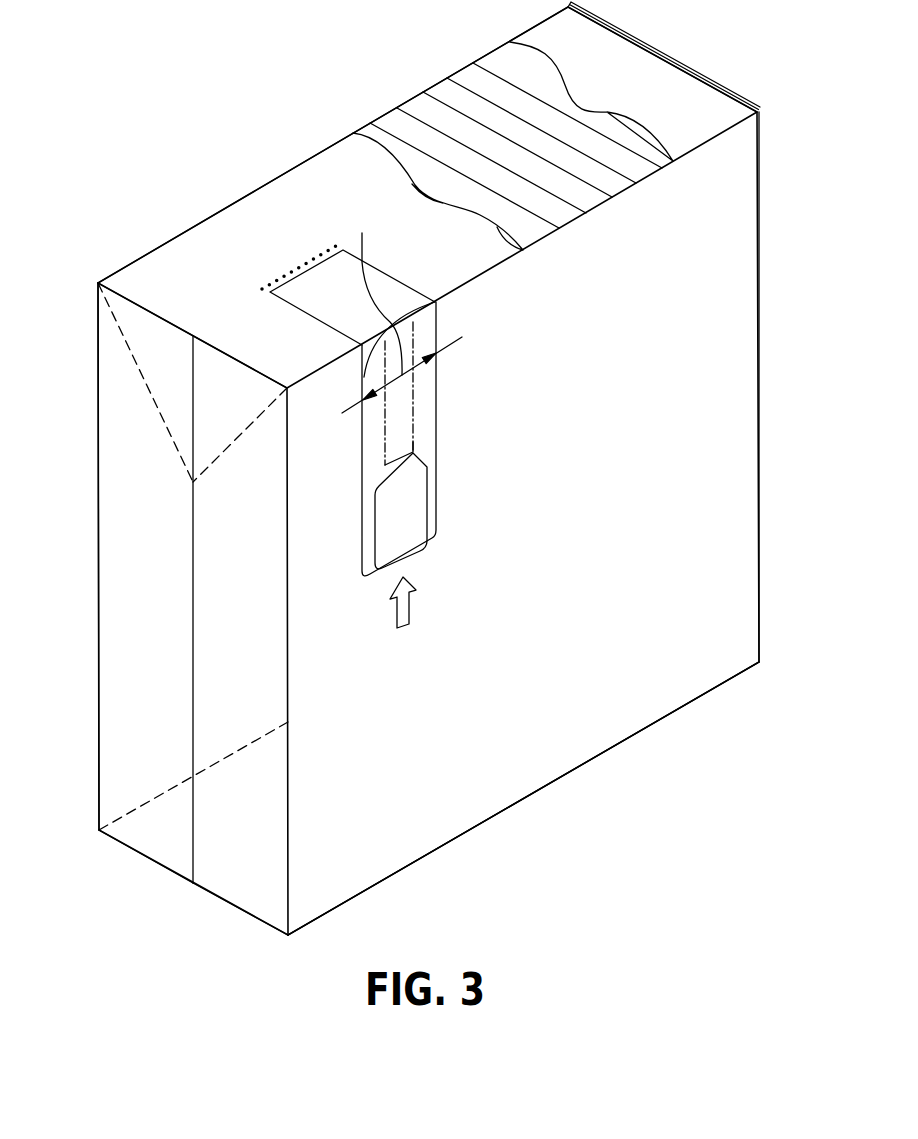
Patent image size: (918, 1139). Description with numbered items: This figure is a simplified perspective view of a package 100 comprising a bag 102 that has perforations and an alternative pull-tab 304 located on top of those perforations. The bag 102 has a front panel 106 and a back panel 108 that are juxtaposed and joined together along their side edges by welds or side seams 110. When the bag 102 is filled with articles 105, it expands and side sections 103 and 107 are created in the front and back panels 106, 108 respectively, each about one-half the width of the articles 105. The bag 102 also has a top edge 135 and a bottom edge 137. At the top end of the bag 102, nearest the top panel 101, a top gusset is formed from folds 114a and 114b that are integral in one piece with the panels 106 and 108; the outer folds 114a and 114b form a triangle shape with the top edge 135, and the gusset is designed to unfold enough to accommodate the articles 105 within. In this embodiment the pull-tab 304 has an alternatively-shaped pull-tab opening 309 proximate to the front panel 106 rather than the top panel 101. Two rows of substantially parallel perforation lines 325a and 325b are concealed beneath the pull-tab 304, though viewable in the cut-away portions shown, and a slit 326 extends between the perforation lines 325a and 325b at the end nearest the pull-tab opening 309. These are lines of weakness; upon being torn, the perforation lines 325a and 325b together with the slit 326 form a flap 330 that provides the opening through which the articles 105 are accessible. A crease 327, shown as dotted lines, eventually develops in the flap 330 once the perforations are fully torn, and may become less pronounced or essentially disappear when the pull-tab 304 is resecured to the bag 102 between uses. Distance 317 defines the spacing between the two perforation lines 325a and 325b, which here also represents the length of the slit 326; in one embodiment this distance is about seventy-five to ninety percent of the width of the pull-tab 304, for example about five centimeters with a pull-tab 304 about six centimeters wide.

The package 100 is at (288, 69).
The top panel 101 is at (333, 151).
The bag 102 is at (762, 381).
The side section 103 is at (238, 900).
The articles 105 is at (470, 76).
The front panel 106 is at (647, 715).
The side section 107 is at (140, 845).
The back panel 108 is at (100, 708).
The side seam 110 is at (193, 606).
The fold 114a is at (172, 437).
The fold 114b is at (218, 458).
The top edge 135 is at (170, 322).
The bottom edge 137 is at (526, 797).
The pull-tab 304 is at (440, 503).
The pull-tab opening 309 is at (417, 531).
The distance 317 is at (372, 290).
The perforation line 325a is at (383, 437).
The perforation line 325b is at (415, 396).
The slit 326 is at (418, 458).
The crease 327 is at (292, 268).
The flap 330 is at (405, 428).